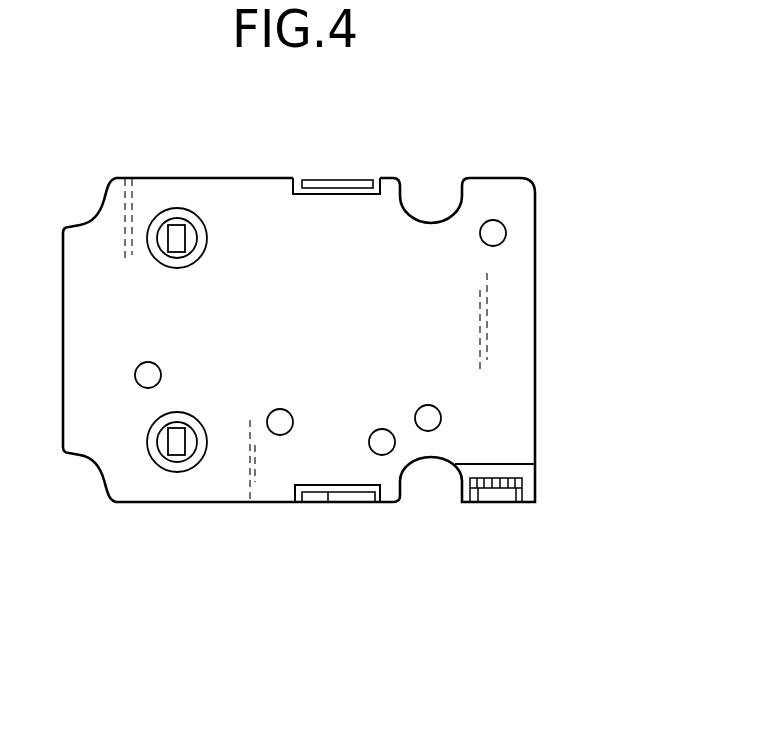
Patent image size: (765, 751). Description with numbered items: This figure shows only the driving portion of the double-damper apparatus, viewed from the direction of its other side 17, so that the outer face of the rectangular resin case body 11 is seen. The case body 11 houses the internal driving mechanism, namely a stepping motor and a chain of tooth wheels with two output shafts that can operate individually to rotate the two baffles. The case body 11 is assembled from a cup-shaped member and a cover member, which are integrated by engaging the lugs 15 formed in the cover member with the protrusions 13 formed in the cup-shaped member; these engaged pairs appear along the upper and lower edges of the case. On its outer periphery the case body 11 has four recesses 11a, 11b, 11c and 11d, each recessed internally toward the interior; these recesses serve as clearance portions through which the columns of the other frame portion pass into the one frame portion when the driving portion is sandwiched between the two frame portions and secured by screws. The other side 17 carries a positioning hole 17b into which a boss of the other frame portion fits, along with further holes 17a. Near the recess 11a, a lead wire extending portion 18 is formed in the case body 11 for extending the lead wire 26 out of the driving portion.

The case body 11 is at (329, 326).
The recess 11a is at (432, 222).
The recess 11b is at (96, 214).
The recess 11c is at (432, 462).
The recess 11d is at (96, 466).
The protrusion 13 is at (328, 175).
The lug 15 is at (360, 177).
The other side 17 is at (518, 354).
The screw fixing hole 17a is at (185, 238).
The positioning hole 17b is at (427, 414).
The lead wire extending portion 18 is at (520, 483).
The lead wire 26 is at (497, 500).